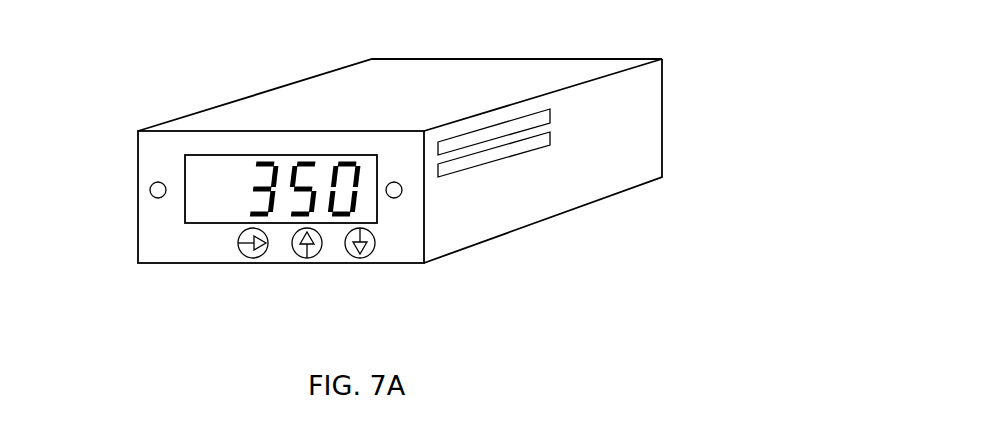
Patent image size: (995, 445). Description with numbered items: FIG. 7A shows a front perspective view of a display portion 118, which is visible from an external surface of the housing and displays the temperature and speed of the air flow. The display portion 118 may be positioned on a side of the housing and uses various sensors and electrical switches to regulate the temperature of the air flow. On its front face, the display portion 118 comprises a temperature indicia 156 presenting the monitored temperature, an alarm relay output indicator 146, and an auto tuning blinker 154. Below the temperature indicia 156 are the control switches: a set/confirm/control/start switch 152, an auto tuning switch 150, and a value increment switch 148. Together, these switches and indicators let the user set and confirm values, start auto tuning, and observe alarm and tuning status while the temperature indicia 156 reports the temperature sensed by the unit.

The display portion 118 is at (696, 93).
The temperature indicia 156 is at (312, 155).
The auto tuning blinker 154 is at (150, 190).
The alarm relay output indicator 146 is at (397, 198).
The set/confirm/control/start switch 152 is at (198, 263).
The auto tuning switch 150 is at (254, 263).
The value increment switch 148 is at (357, 263).